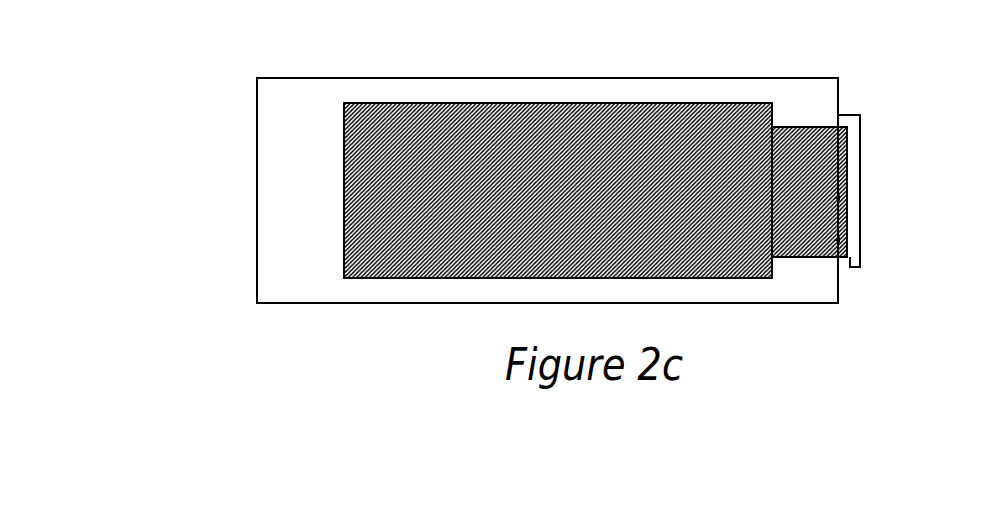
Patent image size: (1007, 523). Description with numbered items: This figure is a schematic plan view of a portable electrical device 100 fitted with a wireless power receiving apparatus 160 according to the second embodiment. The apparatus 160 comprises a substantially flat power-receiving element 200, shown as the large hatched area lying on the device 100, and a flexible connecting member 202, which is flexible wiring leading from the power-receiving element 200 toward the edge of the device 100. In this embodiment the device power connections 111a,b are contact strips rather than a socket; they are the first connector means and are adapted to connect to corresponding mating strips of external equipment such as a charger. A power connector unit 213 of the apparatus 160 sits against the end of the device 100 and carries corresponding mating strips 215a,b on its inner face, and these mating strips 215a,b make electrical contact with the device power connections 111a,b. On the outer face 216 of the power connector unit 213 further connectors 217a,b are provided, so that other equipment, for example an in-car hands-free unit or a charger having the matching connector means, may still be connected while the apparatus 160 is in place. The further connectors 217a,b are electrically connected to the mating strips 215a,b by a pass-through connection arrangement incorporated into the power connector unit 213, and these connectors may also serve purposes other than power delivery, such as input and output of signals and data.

The device 100 is at (257, 184).
The power-receiving element 200 is at (433, 103).
The flexible connecting member 202 is at (815, 127).
The power connector unit 213 is at (860, 126).
The outer face 216 is at (860, 160).
The further connectors 217a,b is at (859, 198).
The device power connections 111a,b is at (762, 315).
The mating strips 215a,b is at (869, 303).
The apparatus 160 is at (407, 280).